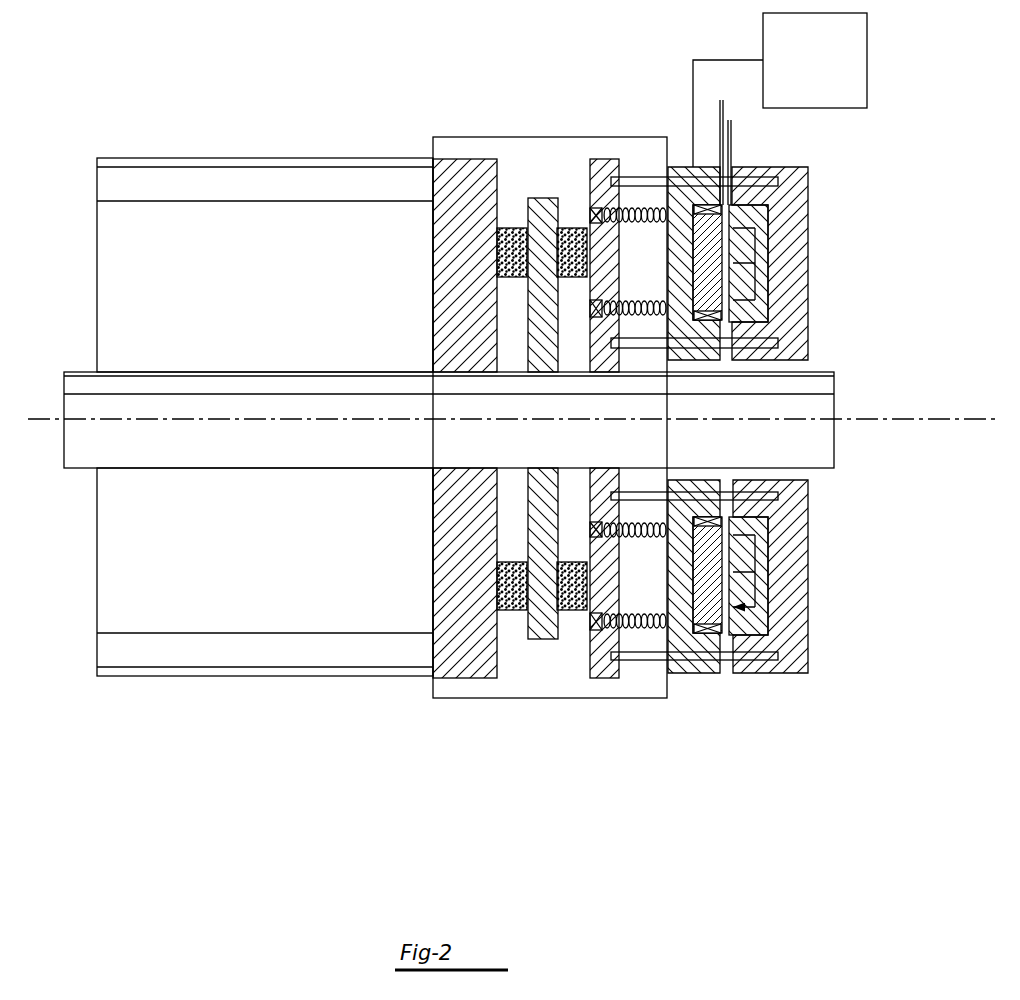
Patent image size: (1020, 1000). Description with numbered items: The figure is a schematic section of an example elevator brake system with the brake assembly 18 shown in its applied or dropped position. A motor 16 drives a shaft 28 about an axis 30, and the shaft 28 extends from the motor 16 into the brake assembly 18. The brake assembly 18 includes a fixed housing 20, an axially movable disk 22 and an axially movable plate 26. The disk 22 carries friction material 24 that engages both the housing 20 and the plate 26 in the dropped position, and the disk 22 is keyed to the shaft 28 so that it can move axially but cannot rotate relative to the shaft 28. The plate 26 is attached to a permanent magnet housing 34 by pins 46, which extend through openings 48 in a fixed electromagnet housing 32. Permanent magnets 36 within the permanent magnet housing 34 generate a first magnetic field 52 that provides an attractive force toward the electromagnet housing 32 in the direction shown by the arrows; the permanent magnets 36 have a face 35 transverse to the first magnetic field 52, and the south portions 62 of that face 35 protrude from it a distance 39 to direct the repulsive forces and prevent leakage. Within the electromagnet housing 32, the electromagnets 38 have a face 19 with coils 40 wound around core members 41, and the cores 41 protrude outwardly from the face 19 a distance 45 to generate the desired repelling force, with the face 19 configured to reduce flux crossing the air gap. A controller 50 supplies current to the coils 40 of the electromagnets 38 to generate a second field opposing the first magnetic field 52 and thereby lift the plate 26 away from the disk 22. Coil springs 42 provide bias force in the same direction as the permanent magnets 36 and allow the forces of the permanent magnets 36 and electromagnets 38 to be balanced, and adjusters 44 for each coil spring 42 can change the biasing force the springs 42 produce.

The motor 16 is at (274, 565).
The brake assembly 18 is at (404, 97).
The face 19 is at (728, 209).
The fixed housing 20 is at (458, 520).
The axially movable disk 22 is at (534, 198).
The friction material 24 is at (573, 228).
The axially movable plate 26 is at (604, 668).
The shaft 28 is at (460, 450).
The axis 30 is at (33, 418).
The fixed electromagnet housing 32 is at (683, 673).
The permanent magnet housing 34 is at (796, 250).
The face 35 is at (718, 322).
The permanent magnets 36 is at (830, 318).
The electromagnets 38 is at (692, 290).
The distance 39 is at (712, 133).
The coils 40 is at (700, 206).
The core members 41 is at (712, 230).
The coil springs 42 is at (652, 632).
The adjusters 44 is at (590, 624).
The distance 45 is at (703, 107).
The pins 46 is at (630, 177).
The openings 48 is at (707, 673).
The controller 50 is at (827, 67).
The first magnetic field 52 is at (757, 263).
The south portions 62 is at (760, 215).